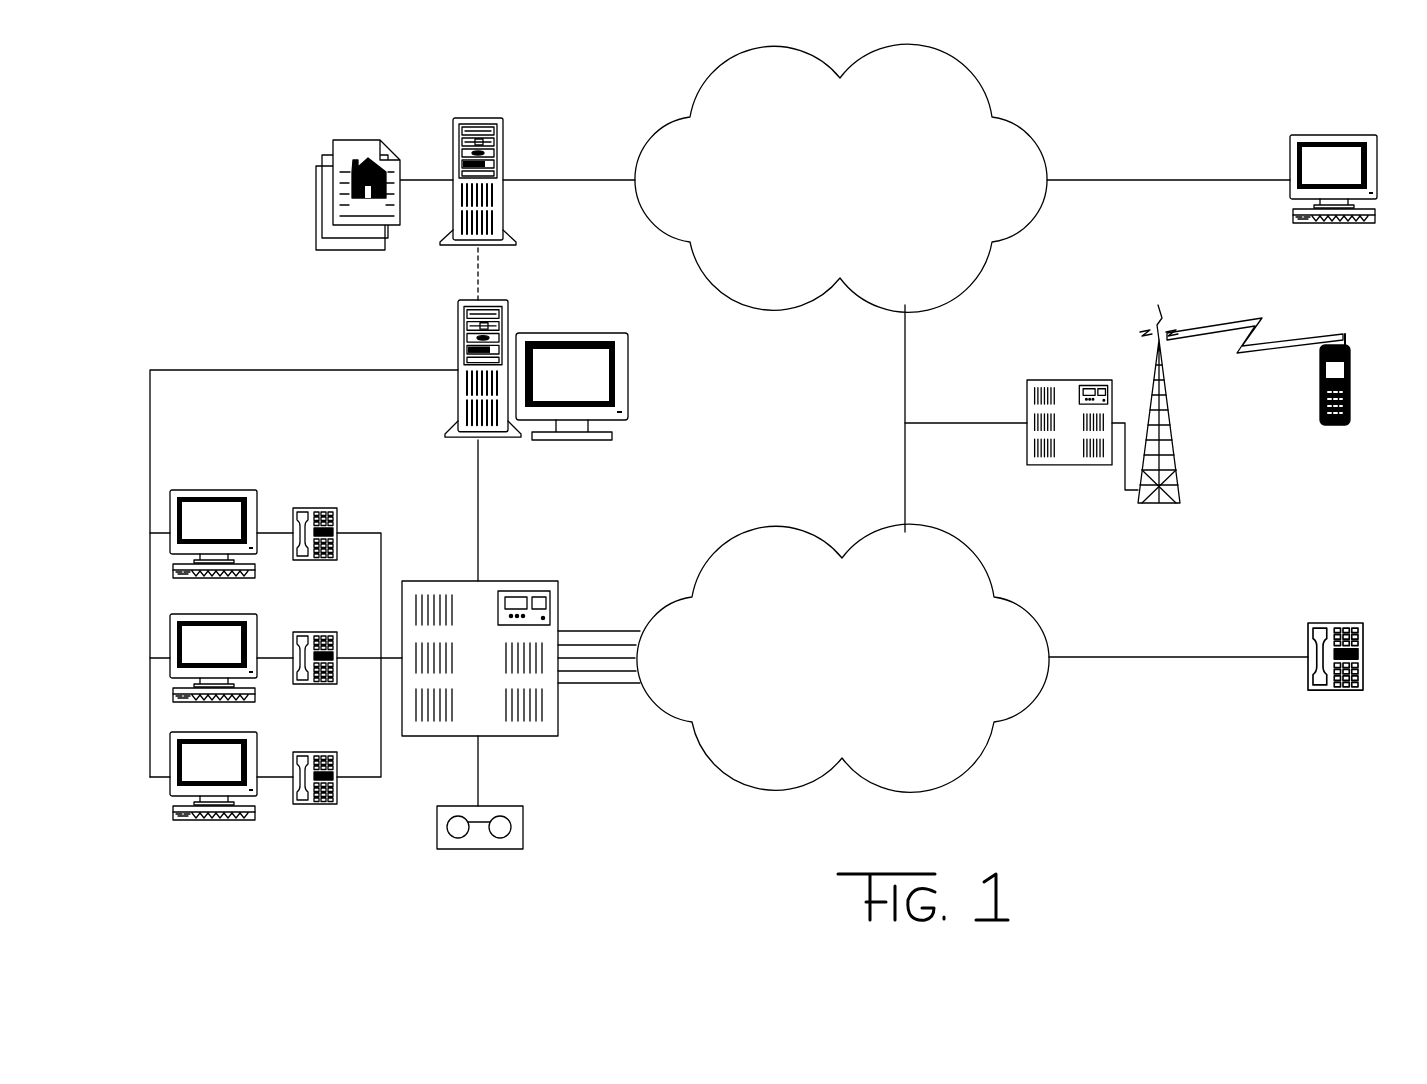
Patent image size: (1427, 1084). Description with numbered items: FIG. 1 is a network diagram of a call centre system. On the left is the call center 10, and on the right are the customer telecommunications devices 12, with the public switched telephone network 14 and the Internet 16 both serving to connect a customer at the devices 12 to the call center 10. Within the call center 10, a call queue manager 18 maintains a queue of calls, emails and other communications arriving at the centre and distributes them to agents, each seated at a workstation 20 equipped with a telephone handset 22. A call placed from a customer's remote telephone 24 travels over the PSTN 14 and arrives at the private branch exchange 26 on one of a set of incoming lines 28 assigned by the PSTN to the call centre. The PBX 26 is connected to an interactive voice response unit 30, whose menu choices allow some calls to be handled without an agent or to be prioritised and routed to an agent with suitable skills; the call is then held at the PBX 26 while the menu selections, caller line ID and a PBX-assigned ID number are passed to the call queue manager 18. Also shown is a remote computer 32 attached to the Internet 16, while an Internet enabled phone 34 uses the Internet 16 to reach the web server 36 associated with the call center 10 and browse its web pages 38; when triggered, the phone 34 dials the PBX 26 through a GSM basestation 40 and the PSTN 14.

The call center 10 is at (237, 212).
The set of customer telecommunications devices 12 is at (1253, 814).
The public switched telephone network (PSTN) 14 is at (756, 783).
The wide area network (Internet) 16 is at (774, 306).
The call queue manager 18 is at (565, 440).
The workstation 20 is at (168, 520).
The telephone handset 22 is at (338, 520).
The remote telephone 24 is at (1363, 640).
The private branch exchange (PBX) 26 is at (530, 737).
The incoming lines 28 is at (622, 609).
The interactive voice response (IVR) unit 30 is at (490, 850).
The remote computer 32 is at (1377, 180).
The Internet enabled phone 34 is at (1350, 384).
The web server 36 is at (503, 128).
The web pages 38 is at (357, 138).
The GSM basestation 40 is at (1070, 465).